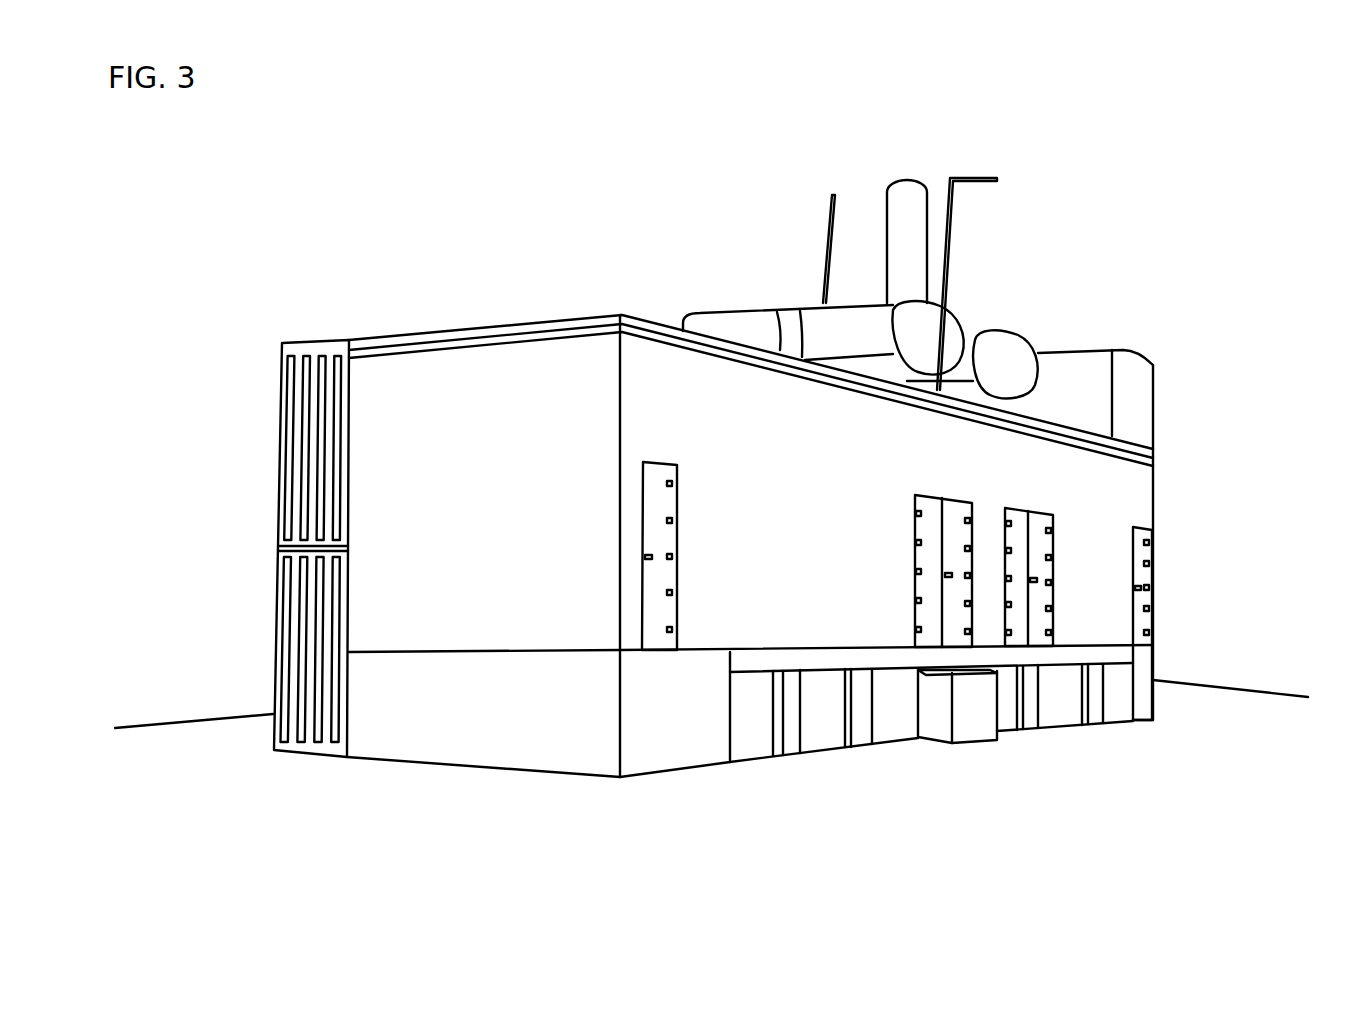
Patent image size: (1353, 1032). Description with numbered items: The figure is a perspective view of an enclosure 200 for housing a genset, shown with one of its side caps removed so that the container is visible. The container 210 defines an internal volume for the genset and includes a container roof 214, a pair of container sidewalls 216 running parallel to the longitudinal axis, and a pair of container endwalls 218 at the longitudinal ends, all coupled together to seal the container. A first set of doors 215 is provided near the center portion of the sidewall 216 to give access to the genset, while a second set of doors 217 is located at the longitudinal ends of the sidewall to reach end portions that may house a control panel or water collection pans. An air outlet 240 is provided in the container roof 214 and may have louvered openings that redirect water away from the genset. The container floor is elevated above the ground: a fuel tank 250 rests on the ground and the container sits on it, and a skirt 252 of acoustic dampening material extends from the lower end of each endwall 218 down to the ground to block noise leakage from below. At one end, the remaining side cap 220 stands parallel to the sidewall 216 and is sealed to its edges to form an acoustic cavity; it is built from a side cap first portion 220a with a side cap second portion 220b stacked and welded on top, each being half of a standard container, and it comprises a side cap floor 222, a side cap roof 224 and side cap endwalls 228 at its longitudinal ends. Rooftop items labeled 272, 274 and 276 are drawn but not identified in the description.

The enclosure 200 is at (1095, 100).
The container 210 is at (1150, 493).
The container roof 214 is at (575, 313).
The first set of doors 215 is at (947, 622).
The container sidewalls 216 is at (1092, 620).
The second set of doors 217 is at (655, 628).
The container endwalls 218 is at (493, 388).
The side cap 220 is at (223, 547).
The side cap first portion 220a is at (218, 649).
The side cap second portion 220b is at (258, 395).
The side cap floor 222 is at (218, 722).
The side cap roof 224 is at (223, 373).
The side cap endwalls 228 is at (288, 583).
The air outlet 240 is at (1167, 381).
The fuel tank 250 is at (823, 726).
The skirt 252 is at (512, 722).
The air handling unit 272 is at (947, 328).
The condenser unit 274 is at (1015, 352).
The exhaust stack 276 is at (897, 218).